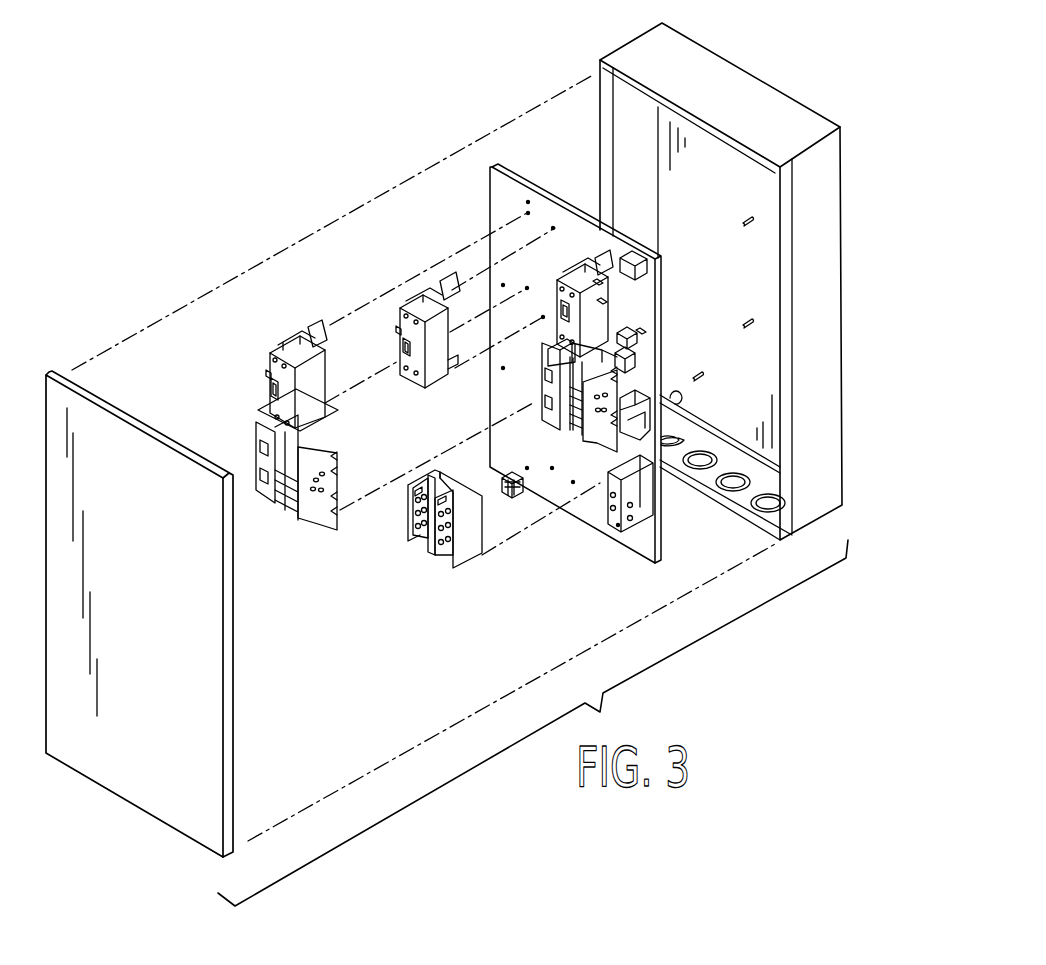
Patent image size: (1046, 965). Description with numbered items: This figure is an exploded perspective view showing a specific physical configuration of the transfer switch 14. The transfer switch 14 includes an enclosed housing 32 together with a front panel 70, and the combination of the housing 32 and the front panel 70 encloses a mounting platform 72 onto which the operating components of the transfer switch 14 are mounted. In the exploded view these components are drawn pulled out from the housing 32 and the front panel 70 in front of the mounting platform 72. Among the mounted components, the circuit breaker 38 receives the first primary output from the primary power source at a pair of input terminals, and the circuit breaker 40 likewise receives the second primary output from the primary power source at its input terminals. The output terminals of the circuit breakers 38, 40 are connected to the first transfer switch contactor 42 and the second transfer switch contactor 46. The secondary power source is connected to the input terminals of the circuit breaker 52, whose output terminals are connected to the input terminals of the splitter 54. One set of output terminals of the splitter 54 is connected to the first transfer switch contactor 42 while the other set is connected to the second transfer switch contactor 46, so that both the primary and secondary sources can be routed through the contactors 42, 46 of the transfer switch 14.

The transfer switch 14 is at (357, 136).
The housing 32 is at (730, 82).
The circuit breaker 38 is at (270, 362).
The circuit breaker 40 is at (562, 278).
The first transfer switch contactor 42 is at (330, 463).
The second transfer switch contactor 46 is at (587, 440).
The circuit breaker 52 is at (402, 318).
The splitter 54 is at (467, 540).
The front panel 70 is at (202, 703).
The mounting platform 72 is at (607, 522).